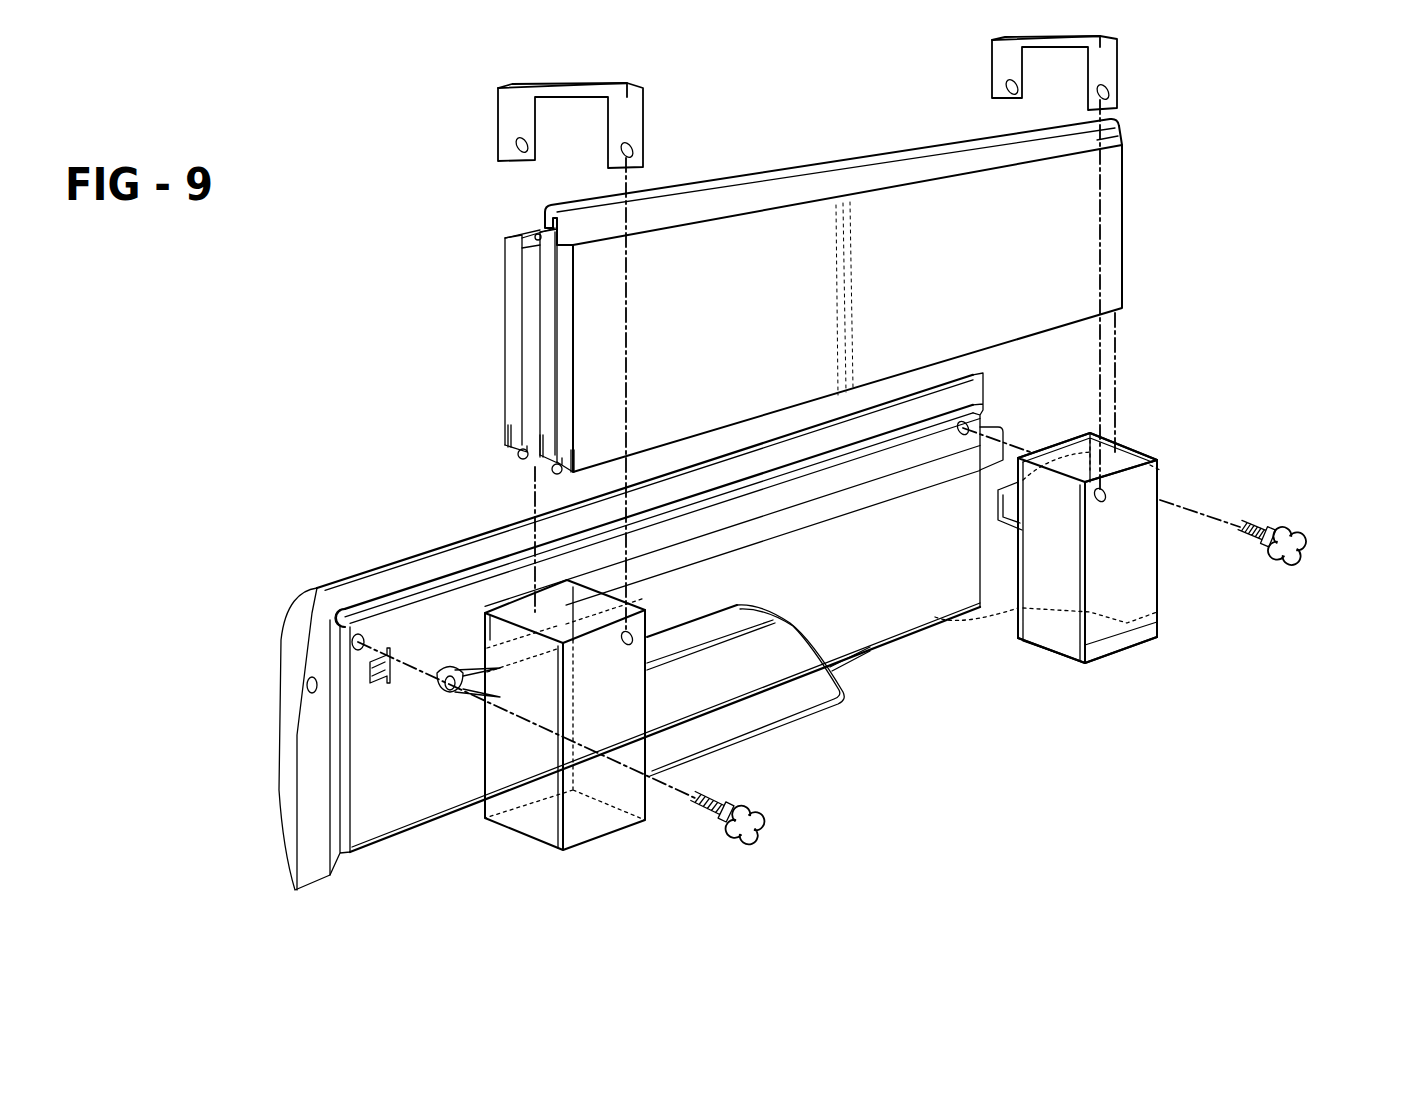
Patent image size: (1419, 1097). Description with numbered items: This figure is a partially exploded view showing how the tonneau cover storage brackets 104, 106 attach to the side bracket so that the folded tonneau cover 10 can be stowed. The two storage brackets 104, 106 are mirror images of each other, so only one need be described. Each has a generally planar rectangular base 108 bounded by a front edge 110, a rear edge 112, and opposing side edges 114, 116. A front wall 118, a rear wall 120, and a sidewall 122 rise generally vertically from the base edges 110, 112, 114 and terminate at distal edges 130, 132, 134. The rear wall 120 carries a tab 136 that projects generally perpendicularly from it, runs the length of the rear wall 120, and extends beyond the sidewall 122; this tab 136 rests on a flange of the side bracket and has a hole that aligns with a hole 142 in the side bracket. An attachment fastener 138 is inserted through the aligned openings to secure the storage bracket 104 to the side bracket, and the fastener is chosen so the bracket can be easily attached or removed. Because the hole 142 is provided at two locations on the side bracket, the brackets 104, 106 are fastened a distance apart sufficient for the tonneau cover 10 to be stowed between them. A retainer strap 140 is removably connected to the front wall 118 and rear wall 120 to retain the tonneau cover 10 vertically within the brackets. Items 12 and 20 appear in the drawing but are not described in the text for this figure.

The tonneau cover 10 is at (765, 148).
The panel 12 is at (702, 309).
The frame 20 is at (385, 563).
The storage bracket 104 is at (1090, 539).
The storage bracket 106 is at (618, 840).
The base 108 is at (1068, 650).
The front edge 110 is at (1148, 644).
The rear edge 112 is at (1000, 615).
The side edge 114 is at (1130, 622).
The side edge 116 is at (1035, 648).
The front wall 118 is at (1150, 480).
The rear wall 120 is at (1020, 505).
The sidewall 122 is at (1160, 460).
The distal edge 130 is at (1150, 458).
The distal edge 132 is at (1055, 440).
The distal edge 134 is at (1158, 452).
The tab 136 is at (1097, 440).
The attachment fastener 138 is at (1302, 537).
The retainer strap 140 is at (1112, 63).
The hole 142 is at (963, 420).